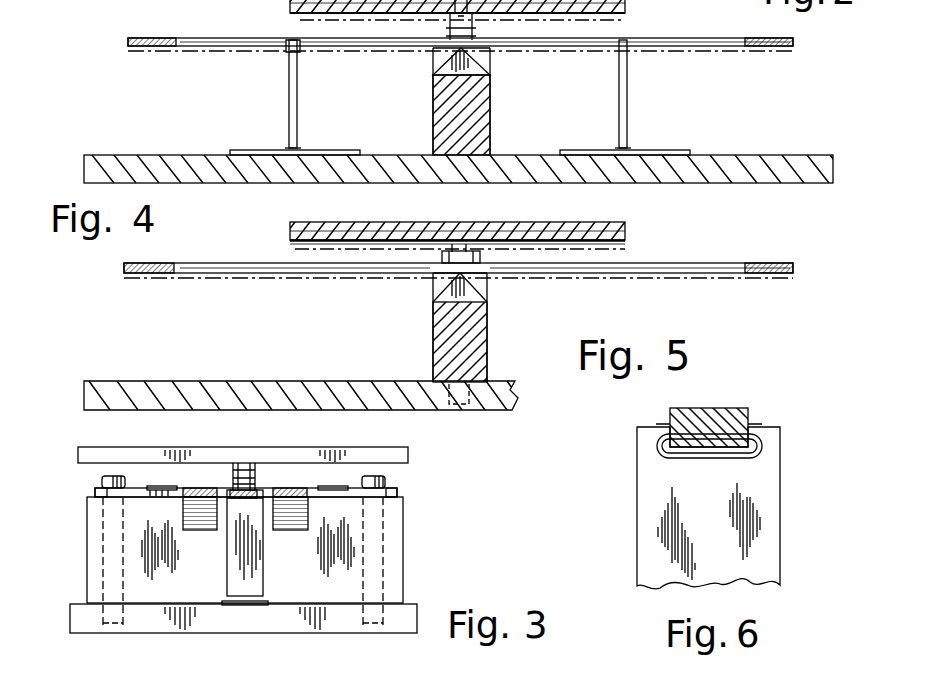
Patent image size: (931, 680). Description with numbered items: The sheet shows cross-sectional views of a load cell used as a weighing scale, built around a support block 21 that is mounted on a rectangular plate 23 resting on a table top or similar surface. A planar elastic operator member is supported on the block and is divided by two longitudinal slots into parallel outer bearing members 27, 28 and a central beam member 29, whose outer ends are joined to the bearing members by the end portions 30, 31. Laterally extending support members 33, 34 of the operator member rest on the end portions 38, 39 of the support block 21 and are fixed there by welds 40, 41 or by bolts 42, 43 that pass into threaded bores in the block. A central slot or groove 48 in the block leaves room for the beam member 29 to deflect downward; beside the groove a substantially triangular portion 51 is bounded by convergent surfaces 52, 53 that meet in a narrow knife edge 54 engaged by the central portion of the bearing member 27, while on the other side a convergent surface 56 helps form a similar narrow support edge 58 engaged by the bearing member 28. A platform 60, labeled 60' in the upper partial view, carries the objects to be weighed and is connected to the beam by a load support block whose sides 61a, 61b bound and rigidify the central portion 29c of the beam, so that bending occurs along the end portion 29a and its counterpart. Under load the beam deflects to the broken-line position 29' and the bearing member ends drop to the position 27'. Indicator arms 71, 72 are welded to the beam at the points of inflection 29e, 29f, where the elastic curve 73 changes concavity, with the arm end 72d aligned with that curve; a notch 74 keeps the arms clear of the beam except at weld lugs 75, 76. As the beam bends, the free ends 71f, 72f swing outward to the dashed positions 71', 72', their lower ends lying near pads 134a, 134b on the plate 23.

In FIG. 3, the support block 21 is at (410, 575).
In FIG. 2, the rectangular plate 23 is at (468, 155).
In FIG. 4, the rectangular plate 23 is at (138, 395).
In FIG. 3, the rectangular plate 23 is at (400, 628).
In FIG. 4, the outer bearing member 27 is at (458, 286).
In FIG. 3, the outer bearing member 27 is at (246, 459).
In FIG. 4, the deflected position of bearing member 27' is at (188, 295).
In FIG. 3, the outer bearing member 28 is at (295, 488).
In FIG. 2, the central beam member 29 is at (460, 28).
In FIG. 5, the central beam member 29 is at (714, 408).
In FIG. 3, the central beam member 29 is at (225, 529).
In FIG. 2, the deflected position of beam member 29' is at (620, 67).
In FIG. 2, the beam end portion 29a is at (738, 48).
In FIG. 2, the central portion of beam 29c is at (438, 62).
In FIG. 2, the point of inflection 29e is at (293, 38).
In FIG. 2, the point of inflection 29f is at (625, 40).
In FIG. 5, the point of inflection 29f is at (734, 406).
In FIG. 2, the end portion of operator member 30 is at (790, 48).
In FIG. 4, the end portion of operator member 30 is at (766, 274).
In FIG. 2, the end portion of operator member 31 is at (140, 44).
In FIG. 4, the end portion of operator member 31 is at (132, 274).
In FIG. 3, the support member 33 is at (94, 494).
In FIG. 3, the support member 34 is at (396, 494).
In FIG. 3, the end portion of support block 38 is at (86, 545).
In FIG. 3, the end portion of support block 39 is at (390, 535).
In FIG. 3, the weld 40 is at (164, 496).
In FIG. 3, the weld 41 is at (333, 496).
In FIG. 4, the bolt 42 is at (456, 243).
In FIG. 3, the bolt 42 is at (102, 482).
In FIG. 3, the bolt 43 is at (388, 486).
In FIG. 3, the central slot or groove 48 is at (268, 520).
In FIG. 2, the triangular portion of block 51 is at (492, 92).
In FIG. 4, the triangular portion of block 51 is at (489, 316).
In FIG. 4, the convergent surface 52 is at (436, 280).
In FIG. 3, the convergent surface 52 is at (200, 530).
In FIG. 4, the convergent surface 53 is at (486, 280).
In FIG. 4, the knife edge 54 is at (481, 262).
In FIG. 3, the knife edge 54 is at (240, 488).
In FIG. 3, the convergent surface 56 is at (300, 520).
In FIG. 3, the support edge 58 is at (278, 488).
In FIG. 4, the platform 60 is at (477, 230).
In FIG. 3, the platform 60 is at (266, 455).
In FIG. 2, the top plate 60' is at (479, 10).
In FIG. 2, the side of load support block 61a is at (476, 28).
In FIG. 2, the side of load support block 61b is at (452, 14).
In FIG. 2, the indicator arm 71 is at (308, 94).
In FIG. 3, the indicator arm 71 is at (259, 547).
In FIG. 2, the deflected position of arm 71' is at (264, 97).
In FIG. 2, the free end of arm 71f is at (300, 142).
In FIG. 2, the indicator arm 72 is at (608, 94).
In FIG. 5, the indicator arm 72 is at (744, 508).
In FIG. 2, the deflected position of arm 72' is at (662, 95).
In FIG. 5, the end of arm 72d is at (648, 428).
In FIG. 2, the free end of arm 72f is at (619, 142).
In FIG. 5, the elastic curve 73 is at (668, 428).
In FIG. 5, the notch 74 is at (742, 455).
In FIG. 5, the weld lug 75 is at (758, 436).
In FIG. 5, the weld lug 76 is at (655, 436).
In FIG. 2, the pad 134a is at (260, 152).
In FIG. 2, the pad 134b is at (656, 152).